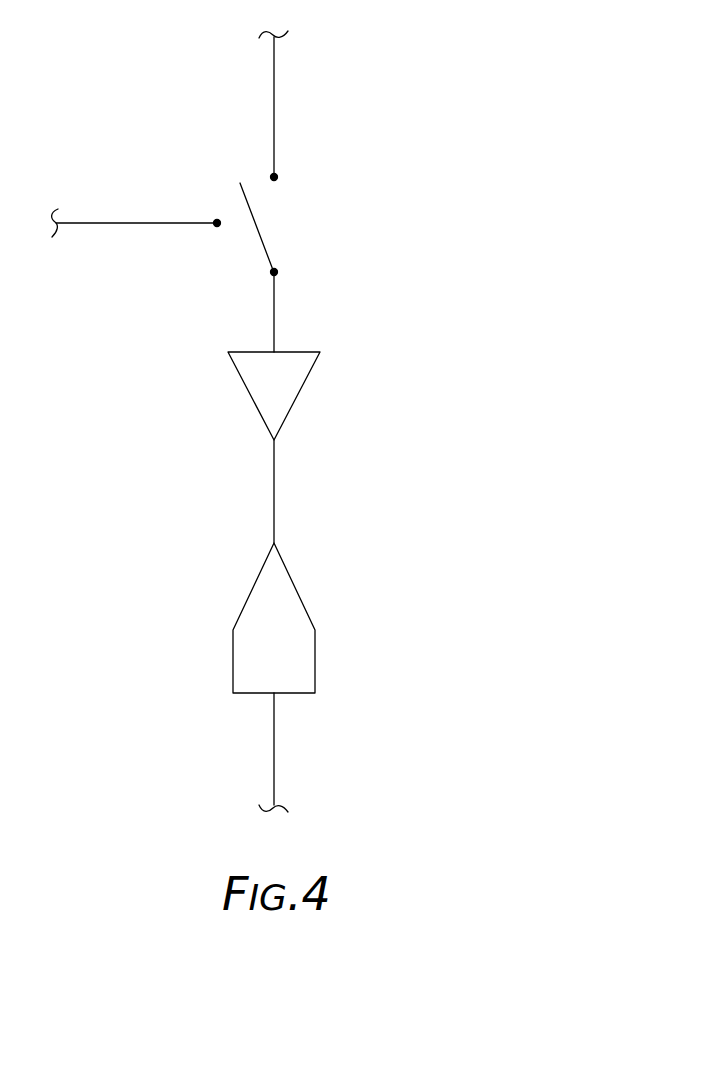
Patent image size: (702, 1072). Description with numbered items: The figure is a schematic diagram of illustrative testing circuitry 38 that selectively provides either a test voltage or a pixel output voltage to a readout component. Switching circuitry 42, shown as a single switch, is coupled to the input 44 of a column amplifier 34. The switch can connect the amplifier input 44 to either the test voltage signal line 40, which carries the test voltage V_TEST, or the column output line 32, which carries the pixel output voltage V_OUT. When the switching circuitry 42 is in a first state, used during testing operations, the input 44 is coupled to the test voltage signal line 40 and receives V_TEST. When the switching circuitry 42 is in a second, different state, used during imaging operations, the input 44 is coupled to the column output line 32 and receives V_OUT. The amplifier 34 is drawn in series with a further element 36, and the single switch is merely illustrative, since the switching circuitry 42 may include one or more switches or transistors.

The column output line 32 is at (274, 62).
The column amplifier 34 is at (297, 396).
The pentagon circuit element 36 is at (298, 590).
The testing circuitry 38 is at (482, 90).
The test voltage signal line 40 is at (156, 224).
The switching circuitry 42 is at (287, 212).
The column amplifier input 44 is at (274, 302).